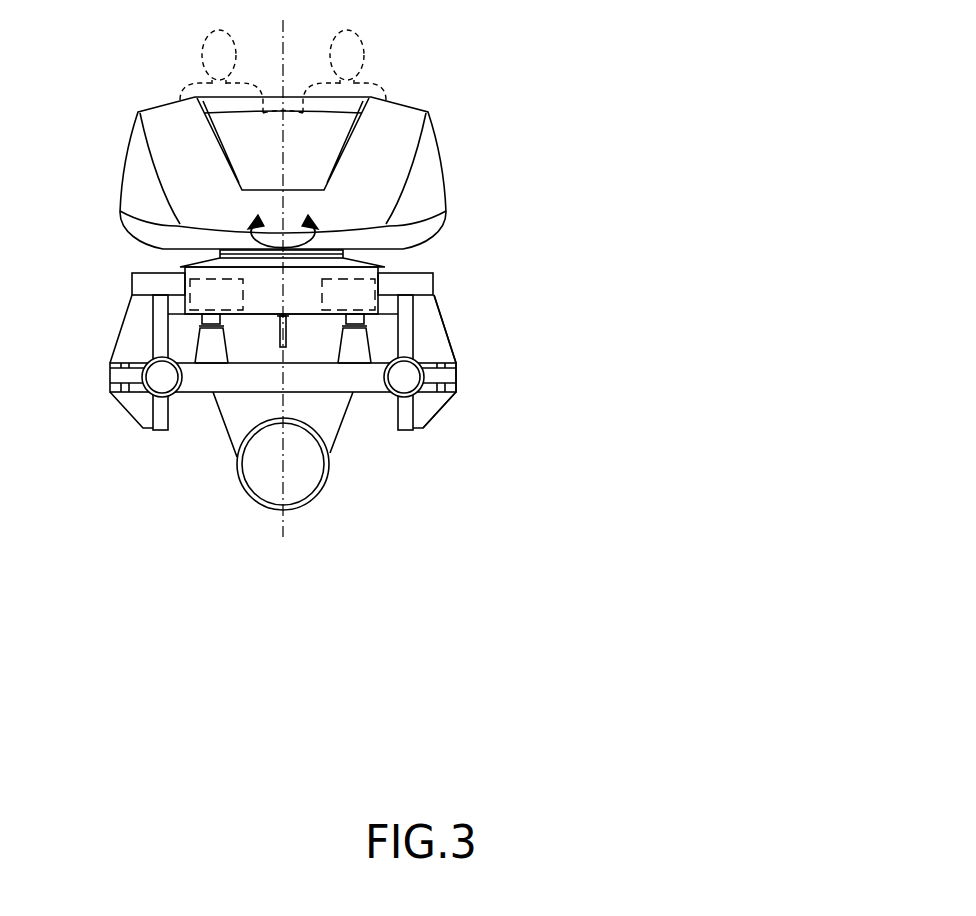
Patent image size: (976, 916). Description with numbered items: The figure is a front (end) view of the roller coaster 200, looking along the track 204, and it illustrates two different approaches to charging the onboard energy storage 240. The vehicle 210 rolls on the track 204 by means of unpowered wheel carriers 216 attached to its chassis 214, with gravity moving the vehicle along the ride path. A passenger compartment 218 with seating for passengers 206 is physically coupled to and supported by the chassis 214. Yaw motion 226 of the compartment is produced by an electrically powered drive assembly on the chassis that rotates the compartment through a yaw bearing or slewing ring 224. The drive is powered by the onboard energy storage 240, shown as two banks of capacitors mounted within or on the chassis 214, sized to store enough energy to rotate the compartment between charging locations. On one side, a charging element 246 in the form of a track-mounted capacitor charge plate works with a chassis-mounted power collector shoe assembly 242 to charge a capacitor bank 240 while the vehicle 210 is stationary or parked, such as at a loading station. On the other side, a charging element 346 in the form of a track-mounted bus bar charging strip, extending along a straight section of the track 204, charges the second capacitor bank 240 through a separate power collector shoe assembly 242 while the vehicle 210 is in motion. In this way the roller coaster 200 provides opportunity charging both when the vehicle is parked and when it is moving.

The roller coaster 200 is at (535, 97).
The track 204 is at (341, 464).
The passengers 206 is at (321, 96).
The vehicle 210 is at (72, 62).
The chassis 214 is at (302, 273).
The wheel carriers 216 is at (460, 338).
The passenger compartment 218 is at (445, 183).
The yaw bearing/slewing ring 224 is at (345, 253).
The yaw motion 226 is at (318, 250).
The onboard energy storage 240 is at (227, 303).
The chassis-mounted power collector shoe assembly 242 is at (215, 325).
The charging element 246 is at (353, 355).
The charging element 346 is at (207, 352).